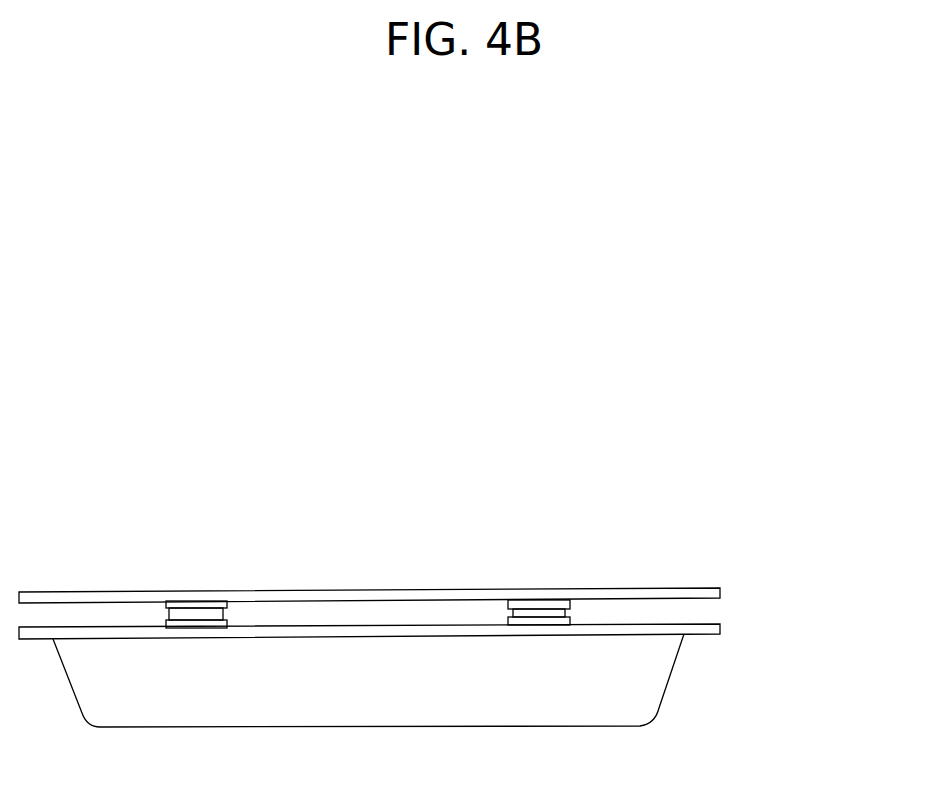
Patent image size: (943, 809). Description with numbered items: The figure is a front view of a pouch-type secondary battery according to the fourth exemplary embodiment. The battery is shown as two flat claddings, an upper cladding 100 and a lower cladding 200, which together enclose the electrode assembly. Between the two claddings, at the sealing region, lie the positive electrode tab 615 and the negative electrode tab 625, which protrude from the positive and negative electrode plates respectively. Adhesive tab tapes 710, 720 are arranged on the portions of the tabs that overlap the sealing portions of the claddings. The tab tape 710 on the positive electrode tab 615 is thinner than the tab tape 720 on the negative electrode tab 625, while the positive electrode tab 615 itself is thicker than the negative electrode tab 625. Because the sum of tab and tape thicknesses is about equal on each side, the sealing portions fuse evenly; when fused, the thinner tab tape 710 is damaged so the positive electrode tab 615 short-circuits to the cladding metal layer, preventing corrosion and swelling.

The upper cladding 100 is at (705, 593).
The lower cladding 200 is at (705, 629).
The positive electrode tab 615 is at (207, 609).
The negative electrode tab 625 is at (568, 608).
The tab tape 710 is at (177, 605).
The tab tape 720 is at (527, 603).